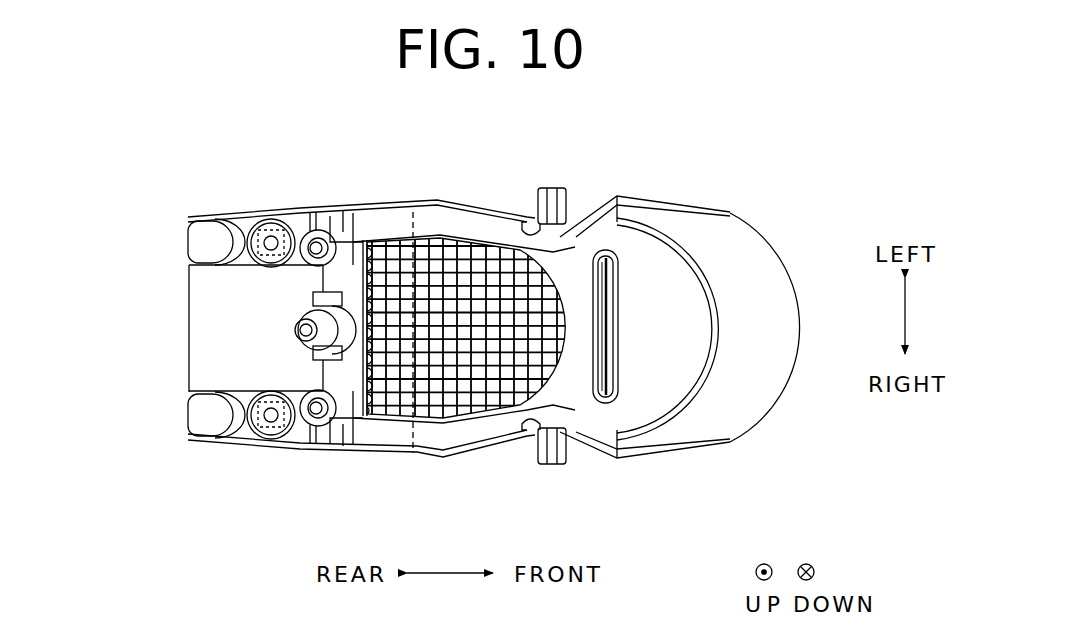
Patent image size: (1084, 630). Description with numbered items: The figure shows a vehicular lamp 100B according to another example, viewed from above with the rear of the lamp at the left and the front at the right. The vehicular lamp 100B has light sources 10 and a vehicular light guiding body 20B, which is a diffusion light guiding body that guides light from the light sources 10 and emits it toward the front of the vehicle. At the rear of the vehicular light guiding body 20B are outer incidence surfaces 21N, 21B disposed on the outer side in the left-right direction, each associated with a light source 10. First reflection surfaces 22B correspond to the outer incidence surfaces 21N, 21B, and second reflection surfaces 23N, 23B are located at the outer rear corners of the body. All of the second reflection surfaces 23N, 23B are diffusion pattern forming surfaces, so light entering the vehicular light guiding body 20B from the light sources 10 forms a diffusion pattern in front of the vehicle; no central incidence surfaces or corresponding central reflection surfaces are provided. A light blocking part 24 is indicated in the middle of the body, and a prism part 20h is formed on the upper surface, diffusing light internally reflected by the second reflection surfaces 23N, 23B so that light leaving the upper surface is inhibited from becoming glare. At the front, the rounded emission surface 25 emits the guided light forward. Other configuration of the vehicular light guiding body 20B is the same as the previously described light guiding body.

The vehicular lamp 100B is at (776, 172).
The emission surface 25 is at (772, 412).
The vehicular light guiding body 20B is at (412, 458).
The prism part 20h is at (497, 248).
The light blocking part 24 is at (414, 212).
The diffusion pattern forming surface 23N is at (152, 309).
The second reflection surface 23B is at (215, 211).
The outer incidence surface 21N is at (256, 316).
The grommet 21B is at (275, 220).
The light source 10 is at (262, 212).
The first reflection surface 22B is at (303, 226).